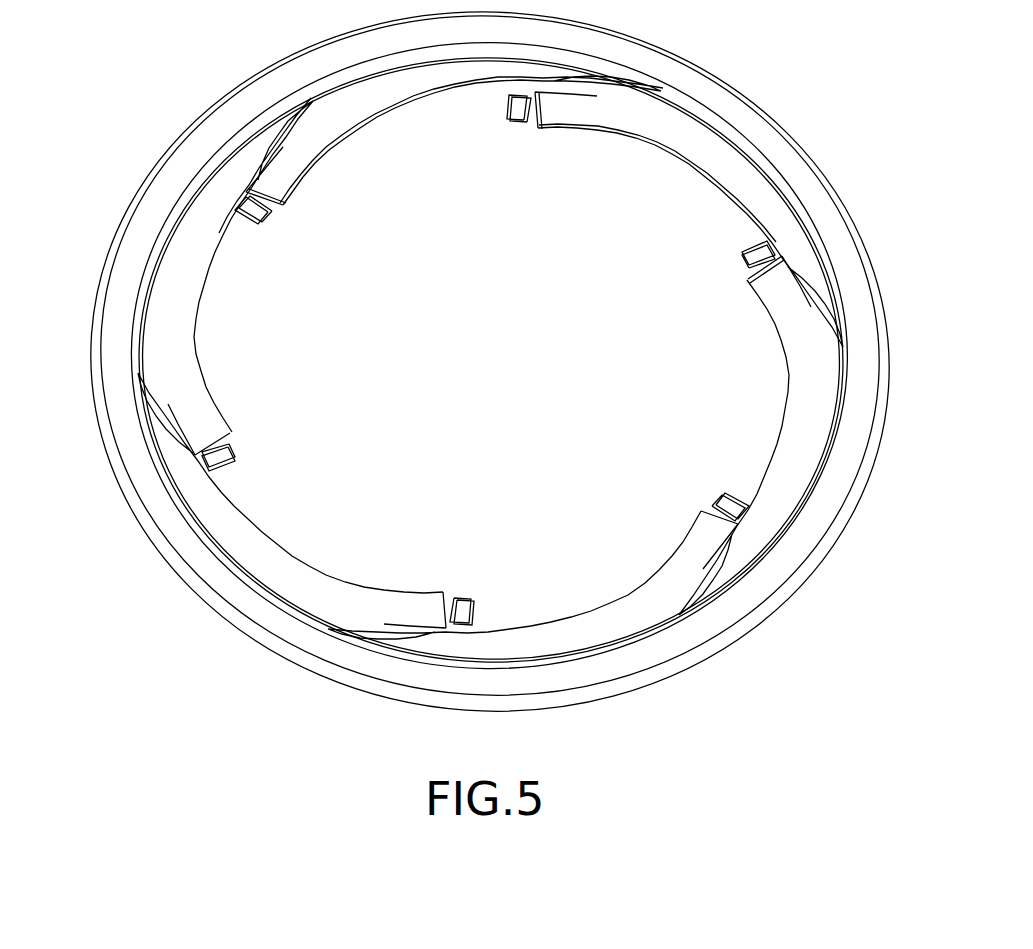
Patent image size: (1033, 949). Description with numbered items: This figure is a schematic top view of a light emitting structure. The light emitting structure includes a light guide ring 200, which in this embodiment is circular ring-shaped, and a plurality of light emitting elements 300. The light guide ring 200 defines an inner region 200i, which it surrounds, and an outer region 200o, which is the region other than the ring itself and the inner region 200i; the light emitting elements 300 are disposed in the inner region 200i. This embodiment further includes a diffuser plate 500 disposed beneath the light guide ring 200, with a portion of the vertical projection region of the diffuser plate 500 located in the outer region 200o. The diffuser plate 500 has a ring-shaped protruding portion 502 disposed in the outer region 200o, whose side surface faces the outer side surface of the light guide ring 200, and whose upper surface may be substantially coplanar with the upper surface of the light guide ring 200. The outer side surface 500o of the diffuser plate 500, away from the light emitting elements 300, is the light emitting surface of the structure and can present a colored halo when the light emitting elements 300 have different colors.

The diffuser plate 500 is at (490, 369).
The outer side surface 500o is at (179, 130).
The protruding portion 502 is at (173, 190).
The light guide ring 200 is at (491, 351).
The outer region 200o is at (813, 57).
The inner region 200i is at (510, 367).
The light emitting elements 300 is at (508, 108).